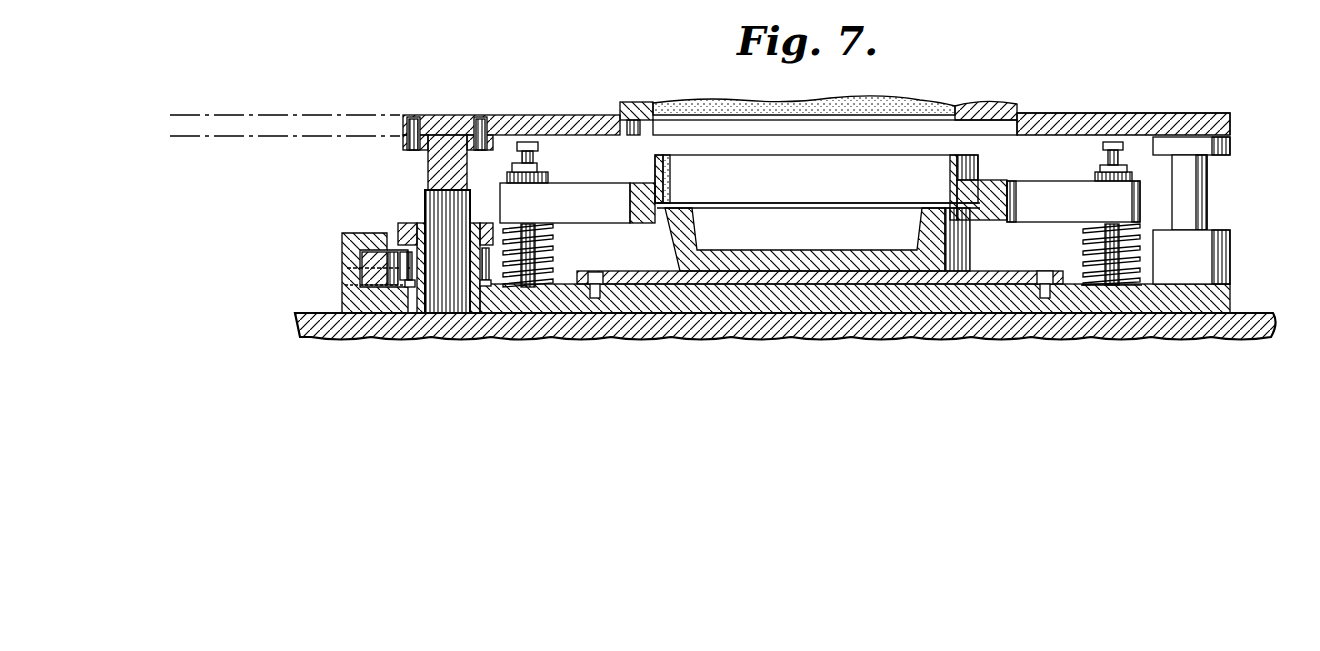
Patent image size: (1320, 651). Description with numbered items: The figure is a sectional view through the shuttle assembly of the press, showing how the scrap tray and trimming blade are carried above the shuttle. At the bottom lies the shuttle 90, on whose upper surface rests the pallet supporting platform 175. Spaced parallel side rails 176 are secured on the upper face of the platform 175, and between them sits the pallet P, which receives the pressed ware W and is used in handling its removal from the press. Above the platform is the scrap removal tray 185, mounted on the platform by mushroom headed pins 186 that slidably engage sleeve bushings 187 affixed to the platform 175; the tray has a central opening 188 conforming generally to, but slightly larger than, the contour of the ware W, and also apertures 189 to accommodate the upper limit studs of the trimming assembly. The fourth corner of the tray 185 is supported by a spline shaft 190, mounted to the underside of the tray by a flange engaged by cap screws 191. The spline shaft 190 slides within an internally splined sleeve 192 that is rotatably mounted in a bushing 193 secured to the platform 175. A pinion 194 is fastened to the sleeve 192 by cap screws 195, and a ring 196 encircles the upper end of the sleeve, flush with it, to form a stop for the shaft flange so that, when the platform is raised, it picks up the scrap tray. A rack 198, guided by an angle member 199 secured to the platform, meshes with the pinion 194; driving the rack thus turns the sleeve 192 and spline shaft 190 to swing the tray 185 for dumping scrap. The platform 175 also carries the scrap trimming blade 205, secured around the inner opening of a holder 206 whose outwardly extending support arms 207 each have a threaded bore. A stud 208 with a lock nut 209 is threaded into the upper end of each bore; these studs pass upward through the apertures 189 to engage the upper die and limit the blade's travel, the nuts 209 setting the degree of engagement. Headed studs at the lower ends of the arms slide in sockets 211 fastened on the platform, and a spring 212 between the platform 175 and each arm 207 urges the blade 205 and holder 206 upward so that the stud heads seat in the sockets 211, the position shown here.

The shuttle 90 is at (1245, 313).
The pallet supporting platform 175 is at (1230, 292).
The side rails 176 is at (607, 272).
The scrap removal tray 185 is at (1180, 115).
The mushroom headed pins 186 is at (1205, 177).
The sleeve bushings 187 is at (1217, 230).
The central opening 188 is at (951, 106).
The apertures 189 is at (538, 115).
The spline shaft 190 is at (427, 202).
The cap screws 191 is at (480, 113).
The internally splined sleeve 192 is at (425, 223).
The bushing 193 is at (418, 292).
The pinion 194 is at (362, 268).
The cap screws 195 is at (408, 302).
The ring 196 is at (400, 226).
The rack 198 is at (350, 277).
The angle member 199 is at (343, 264).
The scrap trimming blade 205 is at (656, 168).
The holder 206 is at (638, 220).
The support arms 207 is at (578, 214).
The stud 208 is at (540, 146).
The lock nut 209 is at (537, 167).
The sockets 211 is at (1086, 268).
The spring 212 is at (1085, 240).
The pallet P is at (807, 284).
The pressed ware W is at (953, 246).